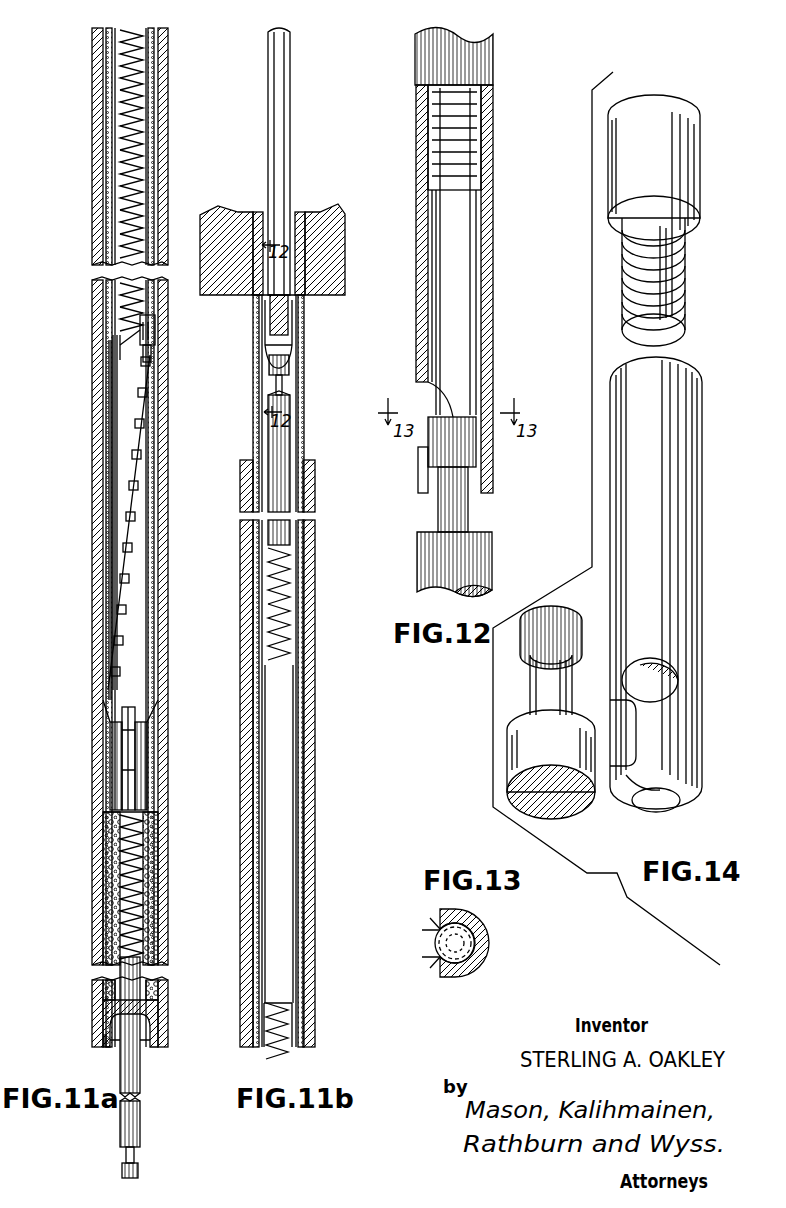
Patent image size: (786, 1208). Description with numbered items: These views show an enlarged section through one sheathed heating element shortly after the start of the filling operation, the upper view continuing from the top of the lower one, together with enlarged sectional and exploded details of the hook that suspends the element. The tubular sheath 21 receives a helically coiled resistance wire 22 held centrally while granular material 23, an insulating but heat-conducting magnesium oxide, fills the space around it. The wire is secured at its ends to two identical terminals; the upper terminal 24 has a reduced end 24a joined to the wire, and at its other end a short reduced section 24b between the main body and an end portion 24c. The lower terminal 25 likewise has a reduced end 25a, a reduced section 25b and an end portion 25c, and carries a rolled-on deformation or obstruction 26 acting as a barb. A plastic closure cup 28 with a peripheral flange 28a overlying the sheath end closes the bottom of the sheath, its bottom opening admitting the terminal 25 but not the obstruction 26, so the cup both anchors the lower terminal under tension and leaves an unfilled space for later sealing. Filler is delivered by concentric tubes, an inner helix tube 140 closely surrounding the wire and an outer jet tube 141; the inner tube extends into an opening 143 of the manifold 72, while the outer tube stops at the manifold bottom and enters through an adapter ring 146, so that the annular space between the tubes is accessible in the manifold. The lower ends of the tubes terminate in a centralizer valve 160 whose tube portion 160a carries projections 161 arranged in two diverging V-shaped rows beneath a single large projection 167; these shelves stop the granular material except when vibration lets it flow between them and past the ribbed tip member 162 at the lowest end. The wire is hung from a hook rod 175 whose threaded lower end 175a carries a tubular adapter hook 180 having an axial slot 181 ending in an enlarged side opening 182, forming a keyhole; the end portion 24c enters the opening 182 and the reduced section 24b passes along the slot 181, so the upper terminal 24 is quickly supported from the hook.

In FIG. 11A, the tubular sheath 21 is at (161, 825).
In FIG. 11B, the tubular sheath 21 is at (312, 752).
In FIG. 11A, the resistance wire 22 is at (140, 50).
In FIG. 11B, the resistance wire 22 is at (290, 635).
In FIG. 11A, the granular material 23 is at (163, 896).
In FIG. 11B, the terminal 24 is at (272, 450).
In FIG. 12, the terminal 24 is at (492, 556).
In FIG. 13, the terminal 24 is at (427, 930).
In FIG. 14, the terminal 24 is at (560, 808).
In FIG. 11B, the reduced cross section end of terminal 24a is at (270, 548).
In FIG. 11B, the reduced cross section portion of terminal 24b is at (278, 388).
In FIG. 12, the reduced cross section portion of terminal 24b is at (468, 516).
In FIG. 13, the reduced cross section portion of terminal 24b is at (446, 965).
In FIG. 14, the reduced cross section portion of terminal 24b is at (542, 698).
In FIG. 11B, the terminal end portion 24c is at (275, 365).
In FIG. 12, the terminal end portion 24c is at (470, 448).
In FIG. 13, the terminal end portion 24c is at (436, 945).
In FIG. 14, the terminal end portion 24c is at (566, 618).
In FIG. 11A, the terminal 25 is at (140, 1073).
In FIG. 11A, the reduced cross section end of terminal 25a is at (103, 915).
In FIG. 11A, the reduced cross section portion of terminal 25b is at (134, 1157).
In FIG. 11A, the terminal end portion 25c is at (138, 1172).
In FIG. 11A, the deformation or obstruction 26 is at (118, 1047).
In FIG. 11A, the closure cup 28 is at (160, 1010).
In FIG. 11A, the peripheral flange 28a is at (100, 1040).
In FIG. 11B, the manifold 72 is at (338, 216).
In FIG. 11A, the inner or helix tube 140 is at (118, 30).
In FIG. 11B, the inner or helix tube 140 is at (260, 715).
In FIG. 11A, the outer or jet tube 141 is at (104, 30).
In FIG. 11B, the outer or jet tube 141 is at (252, 733).
In FIG. 11B, the opening 143 is at (318, 230).
In FIG. 11B, the adapter ring 146 is at (320, 292).
In FIG. 11A, the centralizer valve 160 is at (113, 520).
In FIG. 11A, the tube portion of centralizer valve 160a is at (110, 492).
In FIG. 11A, the projections 161 is at (133, 455).
In FIG. 11A, the tip member 162 is at (122, 772).
In FIG. 11A, the large projection 167 is at (152, 335).
In FIG. 11B, the hook rod 175 is at (290, 100).
In FIG. 12, the hook rod 175 is at (485, 55).
In FIG. 14, the hook rod 175 is at (672, 165).
In FIG. 11B, the threaded end of hook rod 175a is at (266, 302).
In FIG. 12, the threaded end of hook rod 175a is at (465, 120).
In FIG. 14, the threaded end of hook rod 175a is at (688, 262).
In FIG. 11B, the adapter hook 180 is at (293, 328).
In FIG. 12, the adapter hook 180 is at (493, 342).
In FIG. 13, the adapter hook 180 is at (490, 943).
In FIG. 14, the adapter hook 180 is at (688, 525).
In FIG. 12, the slot 181 is at (418, 478).
In FIG. 13, the slot 181 is at (428, 956).
In FIG. 14, the slot 181 is at (625, 792).
In FIG. 11B, the enlarged opening 182 is at (286, 368).
In FIG. 12, the enlarged opening 182 is at (428, 385).
In FIG. 13, the enlarged opening 182 is at (452, 976).
In FIG. 14, the enlarged opening 182 is at (665, 668).